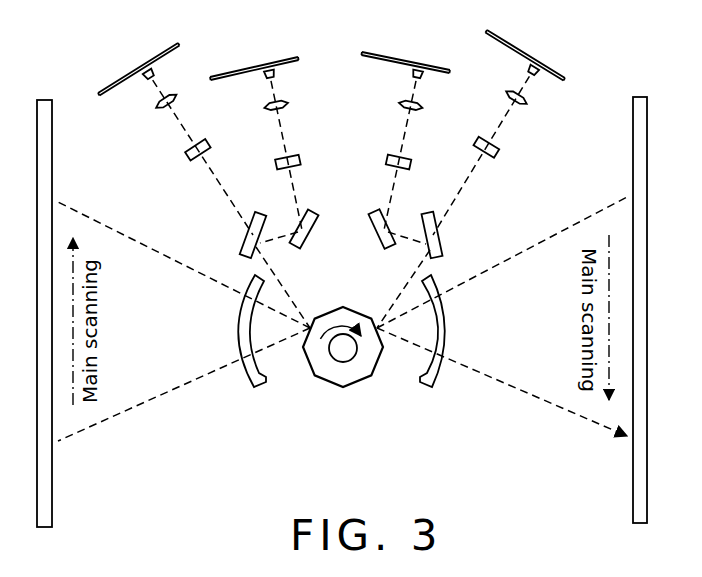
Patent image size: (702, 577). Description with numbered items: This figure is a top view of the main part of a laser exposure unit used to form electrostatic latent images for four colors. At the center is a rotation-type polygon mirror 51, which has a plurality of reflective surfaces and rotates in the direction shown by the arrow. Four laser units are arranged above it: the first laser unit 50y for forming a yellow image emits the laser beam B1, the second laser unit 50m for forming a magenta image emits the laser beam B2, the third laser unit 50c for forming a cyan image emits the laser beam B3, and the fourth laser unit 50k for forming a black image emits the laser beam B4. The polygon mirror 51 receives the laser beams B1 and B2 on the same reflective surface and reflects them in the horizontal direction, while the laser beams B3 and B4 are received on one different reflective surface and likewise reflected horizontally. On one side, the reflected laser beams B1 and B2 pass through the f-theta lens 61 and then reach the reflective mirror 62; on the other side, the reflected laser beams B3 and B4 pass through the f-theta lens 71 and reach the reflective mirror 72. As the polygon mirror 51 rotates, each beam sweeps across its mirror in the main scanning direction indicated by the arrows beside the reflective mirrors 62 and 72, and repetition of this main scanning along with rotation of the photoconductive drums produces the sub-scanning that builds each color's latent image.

The first laser unit 50y is at (150, 80).
The second laser unit 50m is at (278, 74).
The third laser unit 50c is at (419, 76).
The fourth laser unit 50k is at (534, 78).
The laser beam B1 is at (220, 183).
The laser beam B2 is at (281, 127).
The laser beam B3 is at (405, 137).
The laser beam B4 is at (460, 190).
The polygon mirror 51 is at (342, 387).
The fθ1 lens 61 is at (247, 366).
The fθ1 lens 71 is at (437, 367).
The reflective mirror 62 is at (52, 489).
The reflective mirror 72 is at (633, 475).